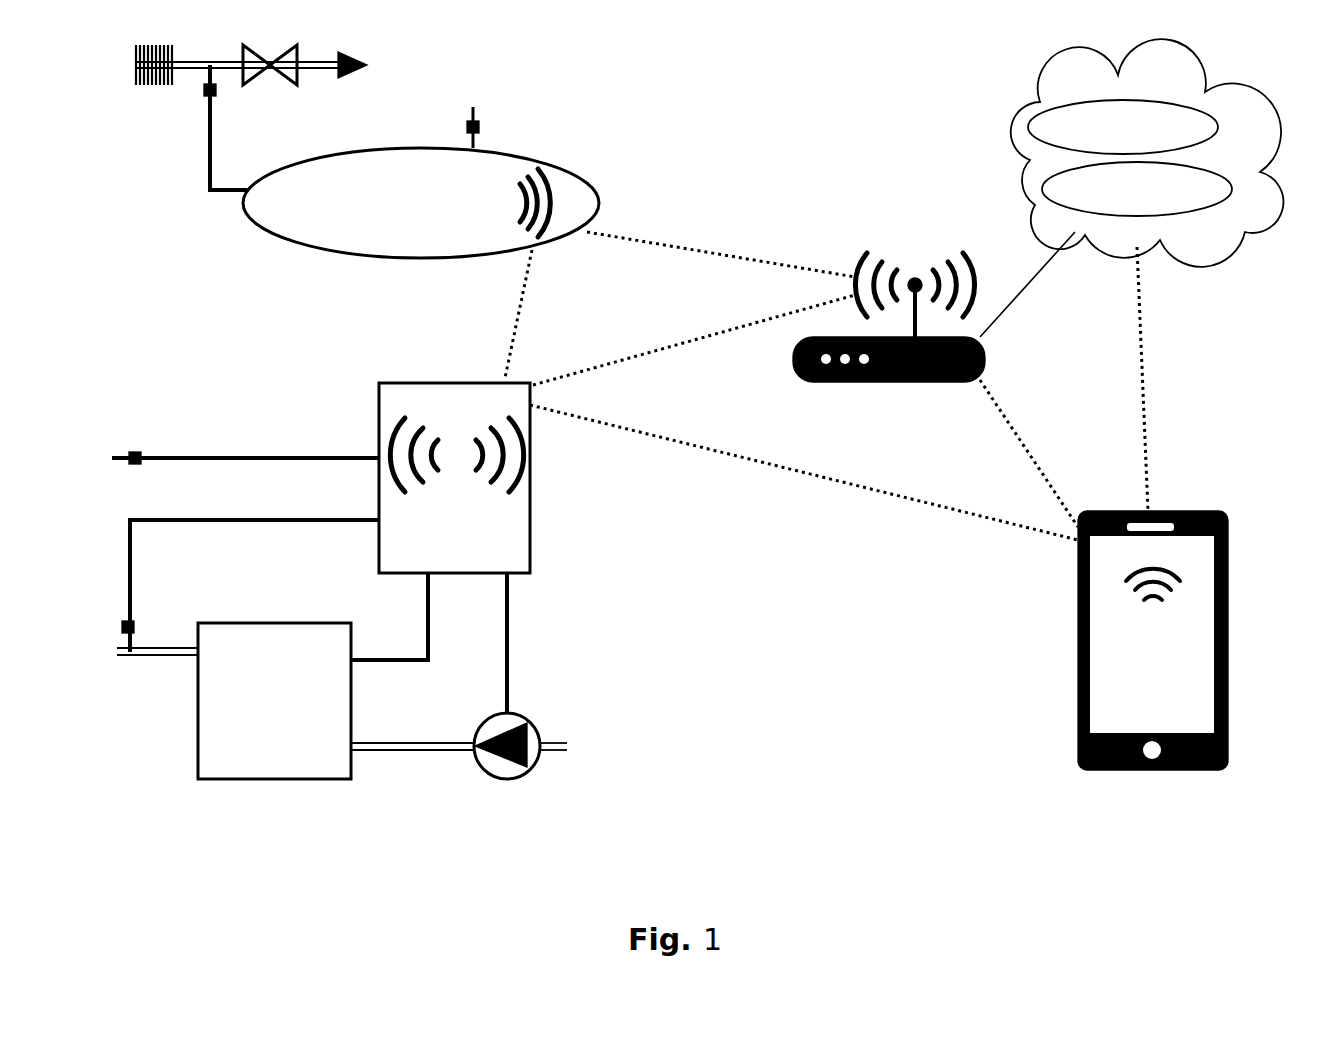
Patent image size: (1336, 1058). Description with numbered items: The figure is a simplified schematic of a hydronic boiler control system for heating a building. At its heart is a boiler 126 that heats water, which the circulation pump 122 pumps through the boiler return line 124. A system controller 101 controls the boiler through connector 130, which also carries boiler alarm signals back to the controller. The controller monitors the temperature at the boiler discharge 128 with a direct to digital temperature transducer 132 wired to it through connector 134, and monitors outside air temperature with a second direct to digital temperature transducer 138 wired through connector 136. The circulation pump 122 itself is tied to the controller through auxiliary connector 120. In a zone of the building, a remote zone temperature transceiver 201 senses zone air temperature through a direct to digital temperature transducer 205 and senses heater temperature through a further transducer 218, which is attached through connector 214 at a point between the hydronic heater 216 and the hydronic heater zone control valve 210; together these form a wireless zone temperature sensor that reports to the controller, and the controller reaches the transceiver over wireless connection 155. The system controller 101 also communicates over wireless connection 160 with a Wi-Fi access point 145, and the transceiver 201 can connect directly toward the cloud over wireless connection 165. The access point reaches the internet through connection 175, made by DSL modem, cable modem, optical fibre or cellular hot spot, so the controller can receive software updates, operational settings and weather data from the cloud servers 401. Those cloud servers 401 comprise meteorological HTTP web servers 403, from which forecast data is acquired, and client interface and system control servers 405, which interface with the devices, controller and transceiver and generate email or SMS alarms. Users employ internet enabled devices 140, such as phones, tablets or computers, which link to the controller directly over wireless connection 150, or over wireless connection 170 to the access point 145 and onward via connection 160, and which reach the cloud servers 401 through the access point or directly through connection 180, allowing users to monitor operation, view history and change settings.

The system controller 101 is at (533, 522).
The auxiliary connector 120 is at (510, 648).
The circulation pump 122 is at (520, 780).
The boiler return line 124 is at (405, 752).
The boiler 126 is at (290, 780).
The boiler discharge 128 is at (166, 660).
The connector 130 is at (430, 690).
The direct to digital temperature transducer 132 is at (148, 630).
The connector 134 is at (300, 522).
The connector 136 is at (236, 490).
The direct to digital temperature transducer 138 is at (152, 410).
The internet enabled devices 140 is at (1095, 772).
The Wi-Fi access point 145 is at (886, 420).
The wireless connection 150 is at (772, 466).
The wireless connection 155 is at (526, 285).
The wireless connection 160 is at (640, 356).
The wireless connection 165 is at (660, 240).
The wireless connection 170 is at (1074, 435).
The internet connection 175 is at (1030, 285).
The connection 180 is at (1150, 360).
The remote zone temperature transceiver 201 is at (242, 222).
The direct to digital temperature transducer 205 is at (480, 127).
The hydronic heater zone control valve 210 is at (288, 88).
The connector 214 is at (207, 152).
The hydronic heater 216 is at (162, 88).
The direct to digital temperature transducer 218 is at (216, 96).
The cloud servers 401 is at (1230, 240).
The meteorological HTTP web servers 403 is at (1123, 127).
The client interface and system control servers 405 is at (1137, 189).